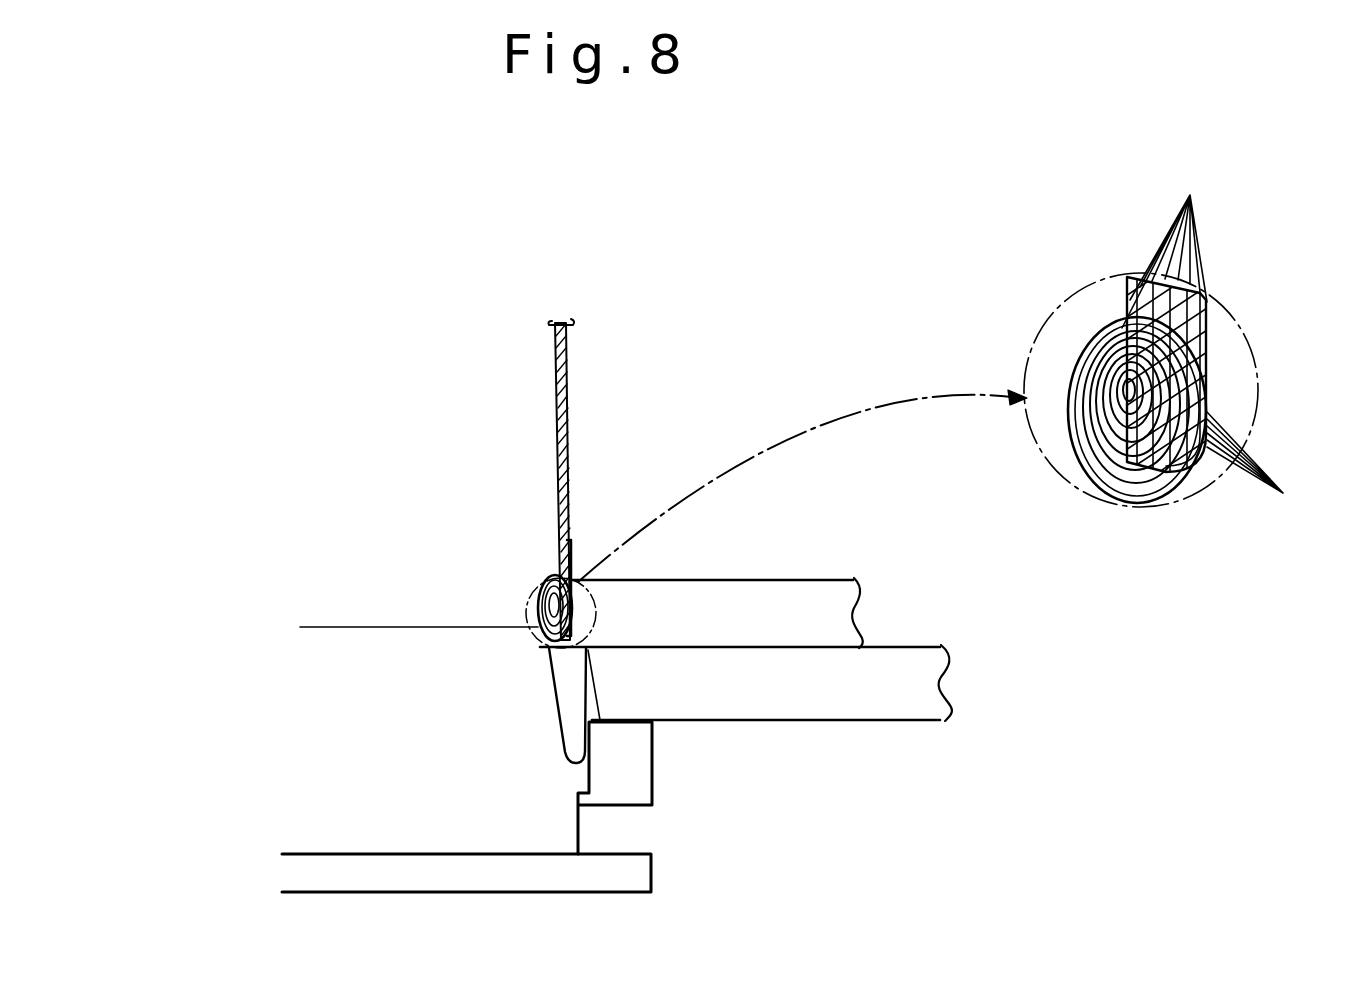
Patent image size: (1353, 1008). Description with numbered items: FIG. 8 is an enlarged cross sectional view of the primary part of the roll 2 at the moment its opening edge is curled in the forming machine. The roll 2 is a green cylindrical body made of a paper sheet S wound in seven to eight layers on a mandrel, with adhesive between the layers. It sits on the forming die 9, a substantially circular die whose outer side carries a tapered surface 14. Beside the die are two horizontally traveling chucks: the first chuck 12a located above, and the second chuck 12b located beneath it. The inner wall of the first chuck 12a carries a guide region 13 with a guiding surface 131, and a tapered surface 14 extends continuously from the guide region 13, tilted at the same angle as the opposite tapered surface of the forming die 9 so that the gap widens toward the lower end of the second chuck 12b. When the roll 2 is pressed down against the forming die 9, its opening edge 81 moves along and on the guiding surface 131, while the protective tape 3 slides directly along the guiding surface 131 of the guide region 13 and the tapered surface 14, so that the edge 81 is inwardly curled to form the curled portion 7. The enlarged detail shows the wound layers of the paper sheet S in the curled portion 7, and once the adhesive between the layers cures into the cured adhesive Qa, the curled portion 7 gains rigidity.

The roll 2 is at (567, 397).
The forming die 9 is at (390, 645).
The first chuck 12a is at (763, 600).
The second chuck 12b is at (866, 703).
The guide region 13 is at (575, 640).
The guiding surface 131 is at (573, 620).
The tapered surface 14 is at (549, 642).
The opening edge 81 is at (1107, 327).
The protective tape 3 is at (1207, 393).
The curled portion 7 is at (1205, 331).
The paper sheet S is at (1164, 241).
The cured adhesive Qa is at (1272, 474).